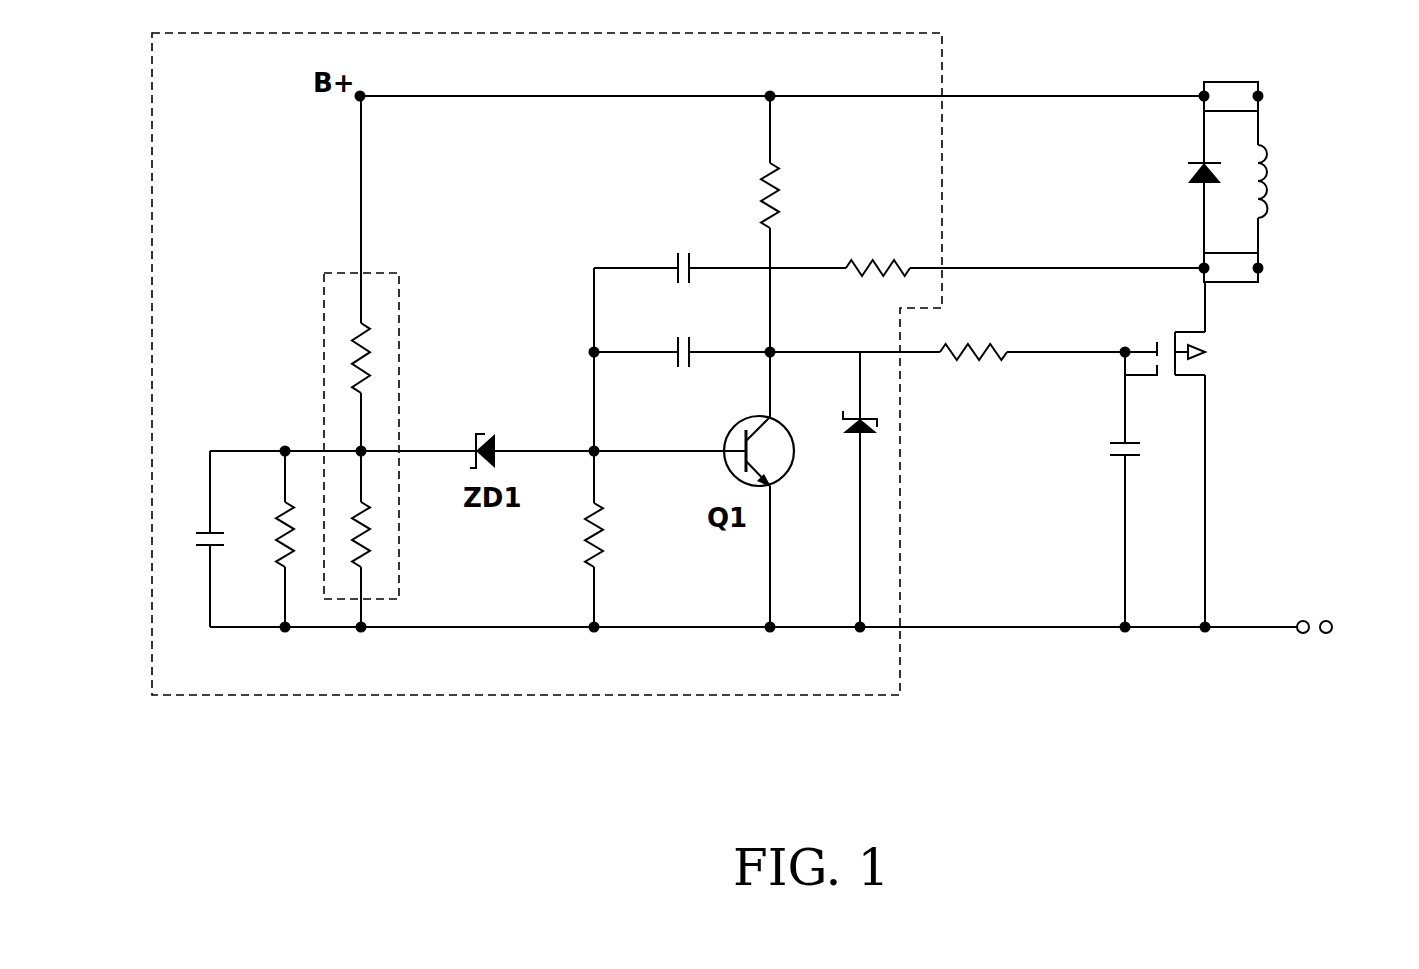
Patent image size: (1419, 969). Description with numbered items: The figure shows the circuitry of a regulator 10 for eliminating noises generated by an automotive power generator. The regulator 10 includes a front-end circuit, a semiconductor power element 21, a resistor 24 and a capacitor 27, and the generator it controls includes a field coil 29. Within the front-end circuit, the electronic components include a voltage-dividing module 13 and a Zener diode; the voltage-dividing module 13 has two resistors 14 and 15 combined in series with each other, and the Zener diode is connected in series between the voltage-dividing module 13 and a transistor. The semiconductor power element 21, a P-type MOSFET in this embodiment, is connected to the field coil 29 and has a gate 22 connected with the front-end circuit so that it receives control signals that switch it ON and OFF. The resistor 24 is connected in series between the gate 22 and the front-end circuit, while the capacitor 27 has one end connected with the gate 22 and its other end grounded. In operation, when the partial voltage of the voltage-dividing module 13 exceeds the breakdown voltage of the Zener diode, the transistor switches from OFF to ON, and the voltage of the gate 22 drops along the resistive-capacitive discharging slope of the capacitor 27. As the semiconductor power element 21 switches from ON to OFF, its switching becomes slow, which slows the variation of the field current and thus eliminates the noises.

The regulator 10 is at (333, 732).
The voltage-dividing module 13 is at (400, 310).
The resistor 14 is at (380, 372).
The resistor 15 is at (372, 540).
The semiconductor power element 21 is at (1210, 352).
The gate 22 is at (1125, 352).
The resistor 24 is at (972, 363).
The capacitor 27 is at (1142, 451).
The field coil 29 is at (1270, 192).